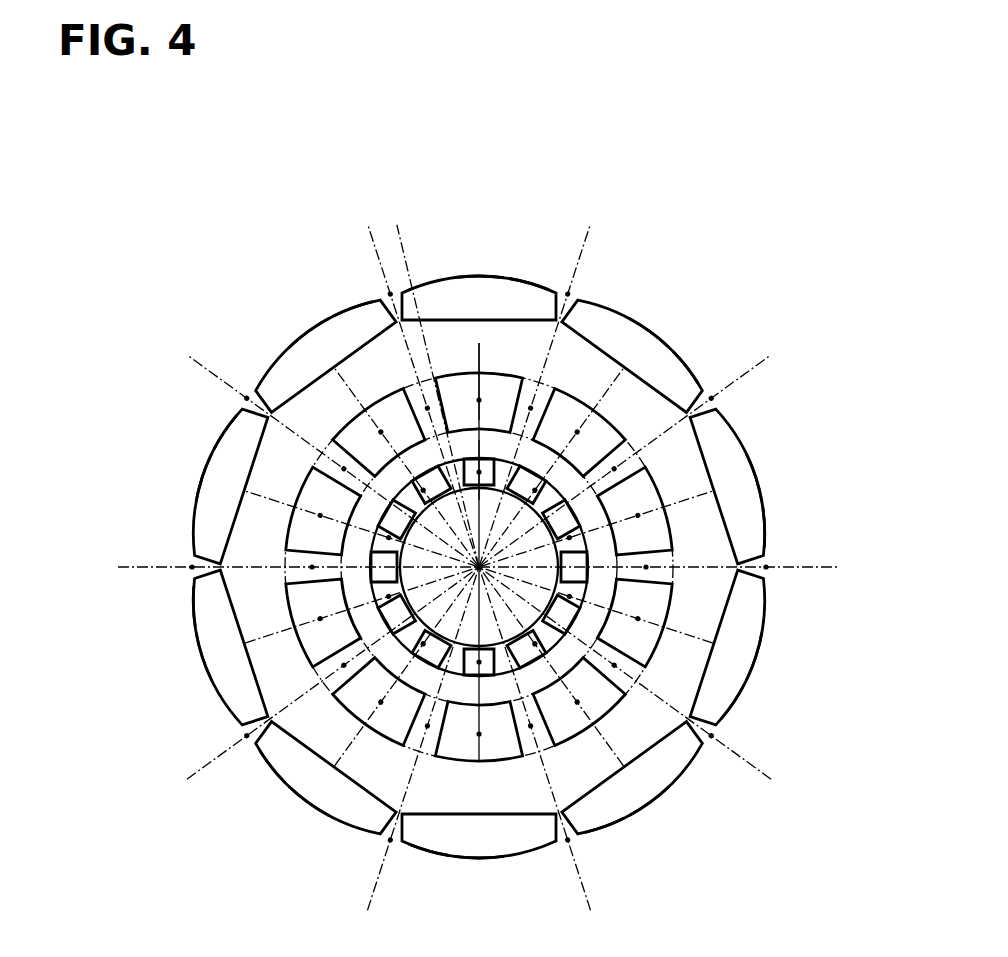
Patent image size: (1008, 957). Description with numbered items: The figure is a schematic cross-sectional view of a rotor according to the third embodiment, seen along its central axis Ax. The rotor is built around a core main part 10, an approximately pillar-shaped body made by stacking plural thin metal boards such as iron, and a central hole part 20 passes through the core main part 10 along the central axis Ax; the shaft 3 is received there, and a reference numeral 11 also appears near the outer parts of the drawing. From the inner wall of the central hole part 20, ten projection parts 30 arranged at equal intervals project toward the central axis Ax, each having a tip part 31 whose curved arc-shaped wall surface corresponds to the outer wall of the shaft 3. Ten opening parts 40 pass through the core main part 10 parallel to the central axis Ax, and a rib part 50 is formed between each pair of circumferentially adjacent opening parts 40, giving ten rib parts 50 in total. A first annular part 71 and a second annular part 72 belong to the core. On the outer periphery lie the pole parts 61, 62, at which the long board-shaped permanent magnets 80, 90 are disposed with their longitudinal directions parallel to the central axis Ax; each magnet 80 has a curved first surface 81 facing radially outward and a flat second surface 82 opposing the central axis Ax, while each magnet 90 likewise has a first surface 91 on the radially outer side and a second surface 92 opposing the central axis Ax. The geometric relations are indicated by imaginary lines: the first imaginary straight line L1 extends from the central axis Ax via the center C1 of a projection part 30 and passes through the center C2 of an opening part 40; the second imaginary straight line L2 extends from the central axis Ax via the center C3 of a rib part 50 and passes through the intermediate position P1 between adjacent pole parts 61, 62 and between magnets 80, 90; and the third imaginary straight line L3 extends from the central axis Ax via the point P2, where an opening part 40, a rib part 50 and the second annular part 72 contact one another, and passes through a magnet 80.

The shaft 3 is at (479, 558).
The core main part 10 is at (476, 569).
The yoke 11 is at (597, 303).
The central hole part 20 is at (480, 560).
The projection part 30 is at (492, 417).
The tip part 31 is at (479, 558).
The opening part 40 is at (462, 408).
The rib part 50 is at (501, 353).
The pole part 61 is at (479, 278).
The pole part 62 is at (665, 345).
The first annular part 71 is at (473, 814).
The second annular part 72 is at (404, 846).
The magnet 80 is at (449, 279).
The first surface 81 is at (509, 279).
The second surface 82 is at (504, 321).
The magnet 90 is at (641, 327).
The first surface 91 is at (684, 362).
The second surface 92 is at (318, 380).
The central axis Ax is at (479, 567).
The first imaginary straight line L1 is at (683, 500).
The second imaginary straight line L2 is at (838, 562).
The third imaginary straight line L3 is at (402, 226).
The intermediate position P1 is at (768, 566).
The point P2 is at (476, 292).
The center C1 is at (478, 470).
The center C2 is at (478, 352).
The center C3 is at (424, 357).